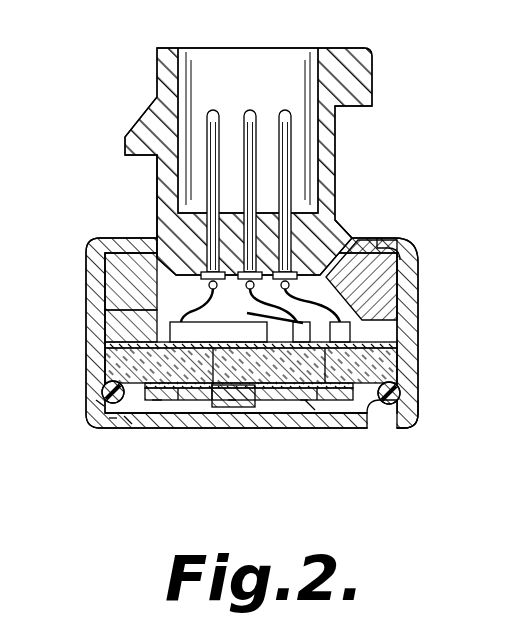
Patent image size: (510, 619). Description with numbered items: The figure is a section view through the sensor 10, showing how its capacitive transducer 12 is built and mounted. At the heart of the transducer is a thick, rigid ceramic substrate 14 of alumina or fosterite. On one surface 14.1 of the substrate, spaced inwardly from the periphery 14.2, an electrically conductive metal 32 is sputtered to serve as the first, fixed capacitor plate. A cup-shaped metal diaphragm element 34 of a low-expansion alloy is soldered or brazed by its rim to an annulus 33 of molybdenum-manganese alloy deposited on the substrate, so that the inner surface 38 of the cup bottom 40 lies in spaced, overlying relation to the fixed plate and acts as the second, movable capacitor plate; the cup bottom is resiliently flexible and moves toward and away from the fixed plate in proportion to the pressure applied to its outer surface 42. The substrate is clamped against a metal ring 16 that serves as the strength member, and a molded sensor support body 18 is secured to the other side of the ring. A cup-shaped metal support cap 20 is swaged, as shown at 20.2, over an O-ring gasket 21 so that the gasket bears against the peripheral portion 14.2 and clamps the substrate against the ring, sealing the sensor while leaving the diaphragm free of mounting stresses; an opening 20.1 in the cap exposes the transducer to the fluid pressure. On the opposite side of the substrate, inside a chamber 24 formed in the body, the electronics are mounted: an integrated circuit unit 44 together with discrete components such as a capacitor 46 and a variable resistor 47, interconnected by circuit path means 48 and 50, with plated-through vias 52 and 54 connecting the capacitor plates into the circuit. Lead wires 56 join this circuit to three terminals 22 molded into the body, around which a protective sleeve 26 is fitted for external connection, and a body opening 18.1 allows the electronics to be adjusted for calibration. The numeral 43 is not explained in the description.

The sensor 10 is at (418, 168).
The capacitive transducer 12 is at (404, 358).
The ceramic substrate 14 is at (135, 357).
The one surface of the substrate 14.1 is at (357, 428).
The periphery of the substrate 14.2 is at (90, 402).
The metal ring 16 is at (105, 341).
The sensor support body 18 is at (337, 143).
The body opening 18.1 is at (373, 233).
The cup-shaped metal support cap 20 is at (100, 241).
The opening 20.1 is at (252, 421).
The swaged portion 20.2 is at (398, 421).
The O-ring gasket 21 is at (100, 404).
The electrically conductive terminals 22 is at (284, 109).
The chamber 24 is at (170, 328).
The protective sleeve 26 is at (316, 72).
The electrically conductive metal 32 is at (201, 413).
The annulus 33 is at (128, 421).
The cup-shaped metal diaphragm element 34 is at (157, 401).
The inner surface of the cup bottom 38 is at (232, 401).
The cup bottom 40 is at (305, 401).
The outer surface of the cup 42 is at (311, 410).
The shoulder 43 is at (352, 415).
The integrated circuit unit 44 is at (108, 283).
The capacitor 46 is at (398, 302).
The variable resistor 47 is at (406, 262).
The circuit path means 48 is at (112, 316).
The circuit path means 50 is at (341, 334).
The plated-through hole or via 52 is at (102, 391).
The plated-through hole or via 54 is at (400, 391).
The lead wires 56 is at (207, 284).